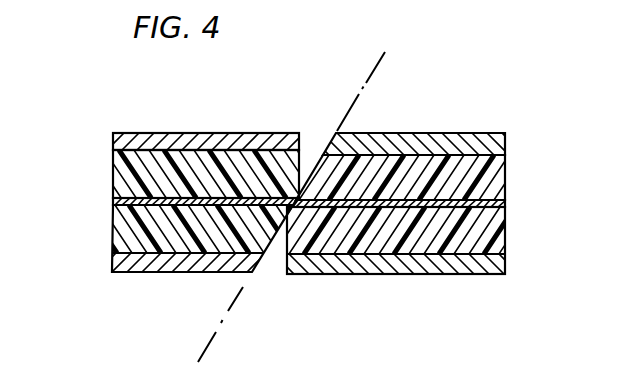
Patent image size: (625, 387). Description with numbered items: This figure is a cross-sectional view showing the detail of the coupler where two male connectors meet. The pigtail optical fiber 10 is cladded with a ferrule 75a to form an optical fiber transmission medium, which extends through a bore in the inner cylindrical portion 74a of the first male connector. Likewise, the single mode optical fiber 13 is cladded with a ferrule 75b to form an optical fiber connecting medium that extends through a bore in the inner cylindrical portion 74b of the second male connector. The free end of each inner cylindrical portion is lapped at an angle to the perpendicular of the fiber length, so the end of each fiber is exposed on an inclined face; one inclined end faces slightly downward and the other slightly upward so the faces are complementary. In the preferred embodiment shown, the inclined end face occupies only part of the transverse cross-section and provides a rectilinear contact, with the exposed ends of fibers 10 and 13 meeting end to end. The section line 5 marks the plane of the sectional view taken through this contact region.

The inner cylindrical portion 74a is at (113, 139).
The ferrule 75a is at (113, 171).
The pigtail optical fiber 10 is at (113, 201).
The inner cylindrical portion 74b is at (505, 143).
The ferrule 75b is at (505, 172).
The single mode optical fiber 13 is at (505, 205).
The section line 5- 5 is at (165, 362).